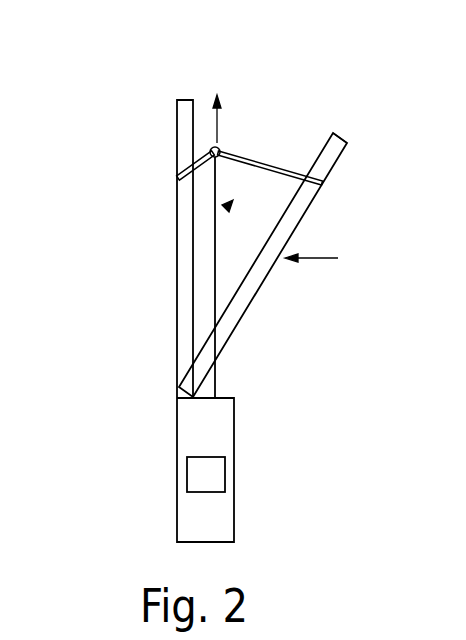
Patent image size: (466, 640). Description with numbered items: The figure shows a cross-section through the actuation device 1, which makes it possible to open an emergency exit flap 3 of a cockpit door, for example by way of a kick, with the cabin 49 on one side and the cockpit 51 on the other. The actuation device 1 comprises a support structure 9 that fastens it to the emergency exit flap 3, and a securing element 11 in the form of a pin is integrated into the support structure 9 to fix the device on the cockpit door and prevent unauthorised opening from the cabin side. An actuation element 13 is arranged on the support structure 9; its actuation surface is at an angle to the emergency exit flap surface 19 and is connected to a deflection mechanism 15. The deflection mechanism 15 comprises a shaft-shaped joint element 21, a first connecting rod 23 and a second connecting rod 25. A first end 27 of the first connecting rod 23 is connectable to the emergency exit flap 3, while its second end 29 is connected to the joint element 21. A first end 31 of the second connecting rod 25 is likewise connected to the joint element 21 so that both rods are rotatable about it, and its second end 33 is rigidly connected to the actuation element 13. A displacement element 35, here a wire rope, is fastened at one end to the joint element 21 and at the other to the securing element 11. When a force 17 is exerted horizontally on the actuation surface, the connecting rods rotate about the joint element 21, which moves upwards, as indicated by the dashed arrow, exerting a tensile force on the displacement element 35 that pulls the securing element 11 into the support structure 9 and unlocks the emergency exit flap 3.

The actuation device 1 is at (357, 125).
The emergency exit flap 3 is at (177, 138).
The support structure 9 is at (200, 414).
The securing elements 11 is at (215, 472).
The actuation element 13 is at (302, 220).
The deflection mechanism 15 is at (190, 266).
The force 17 is at (310, 260).
The emergency exit flap surface 19 is at (226, 208).
The joint element 21 is at (217, 140).
The first connecting rod 23 is at (211, 149).
The second connecting rod 25 is at (266, 165).
The first end of the first connecting rod 27 is at (177, 177).
The second end of the first connecting rod 29 is at (212, 146).
The first end of the second connecting rod 31 is at (228, 153).
The second end of the second connecting rod 33 is at (329, 174).
The displacement element 35 is at (213, 308).
The cabin 49 is at (58, 489).
The cockpit 51 is at (341, 487).